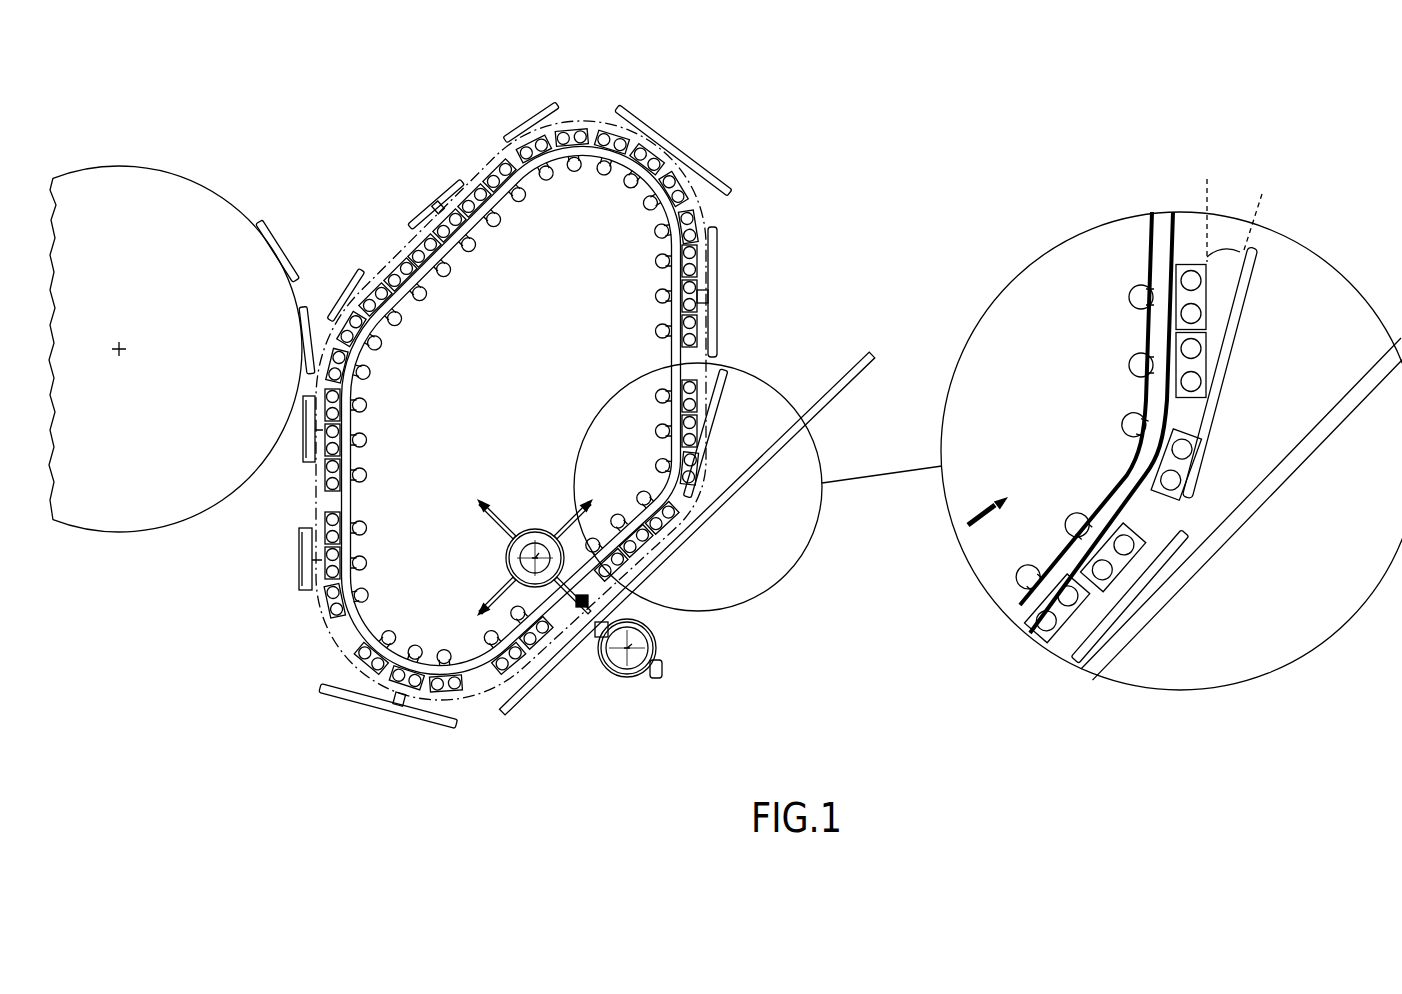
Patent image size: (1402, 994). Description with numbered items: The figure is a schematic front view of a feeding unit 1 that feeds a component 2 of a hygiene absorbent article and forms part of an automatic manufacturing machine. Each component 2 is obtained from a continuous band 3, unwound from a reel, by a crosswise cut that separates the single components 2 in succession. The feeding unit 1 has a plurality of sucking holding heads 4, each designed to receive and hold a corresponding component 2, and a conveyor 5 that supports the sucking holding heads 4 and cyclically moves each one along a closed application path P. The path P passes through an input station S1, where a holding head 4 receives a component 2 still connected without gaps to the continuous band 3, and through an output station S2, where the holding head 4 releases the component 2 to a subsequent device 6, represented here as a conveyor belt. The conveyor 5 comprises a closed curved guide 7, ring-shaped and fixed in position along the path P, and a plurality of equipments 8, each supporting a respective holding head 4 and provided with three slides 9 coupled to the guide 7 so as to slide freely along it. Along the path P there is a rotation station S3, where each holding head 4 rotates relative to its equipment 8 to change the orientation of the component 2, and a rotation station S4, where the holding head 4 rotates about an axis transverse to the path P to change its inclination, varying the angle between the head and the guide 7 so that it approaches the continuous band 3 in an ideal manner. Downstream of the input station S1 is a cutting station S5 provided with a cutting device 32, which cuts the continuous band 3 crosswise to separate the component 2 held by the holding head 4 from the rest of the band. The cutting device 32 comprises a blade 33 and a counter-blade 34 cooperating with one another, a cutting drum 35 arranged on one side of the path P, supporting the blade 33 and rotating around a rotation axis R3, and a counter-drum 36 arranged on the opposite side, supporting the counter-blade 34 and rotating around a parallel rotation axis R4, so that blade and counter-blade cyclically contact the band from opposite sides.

The feeding unit 1 is at (757, 152).
The component 2 is at (289, 232).
The continuous band 3 is at (752, 475).
The sucking holding head 4 is at (712, 300).
The conveyor 5 is at (462, 165).
The subsequent device 6 is at (185, 510).
The closed curved guide 7 is at (660, 233).
The equipment 8 is at (643, 110).
The slide 9 is at (582, 179).
The cutting device 32 is at (660, 622).
The blade 33 is at (656, 680).
The counter-blade 34 is at (480, 500).
The cutting drum 35 is at (628, 690).
The counter-drum 36 is at (500, 558).
The rotation axis R3 is at (660, 668).
The rotation axis R4 is at (536, 530).
The input station S1 is at (742, 545).
The output station S2 is at (322, 300).
The rotation station S3 is at (305, 645).
The rotation station S4 is at (748, 385).
The cutting station S5 is at (577, 678).
The application path P is at (705, 204).